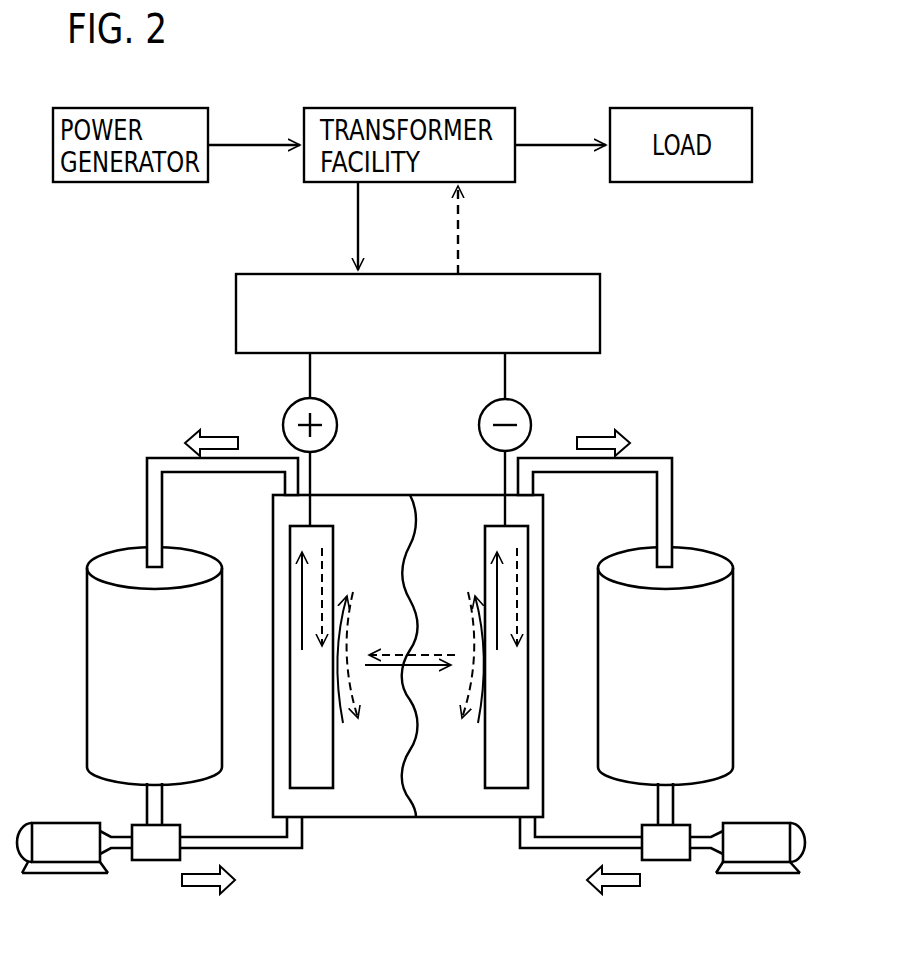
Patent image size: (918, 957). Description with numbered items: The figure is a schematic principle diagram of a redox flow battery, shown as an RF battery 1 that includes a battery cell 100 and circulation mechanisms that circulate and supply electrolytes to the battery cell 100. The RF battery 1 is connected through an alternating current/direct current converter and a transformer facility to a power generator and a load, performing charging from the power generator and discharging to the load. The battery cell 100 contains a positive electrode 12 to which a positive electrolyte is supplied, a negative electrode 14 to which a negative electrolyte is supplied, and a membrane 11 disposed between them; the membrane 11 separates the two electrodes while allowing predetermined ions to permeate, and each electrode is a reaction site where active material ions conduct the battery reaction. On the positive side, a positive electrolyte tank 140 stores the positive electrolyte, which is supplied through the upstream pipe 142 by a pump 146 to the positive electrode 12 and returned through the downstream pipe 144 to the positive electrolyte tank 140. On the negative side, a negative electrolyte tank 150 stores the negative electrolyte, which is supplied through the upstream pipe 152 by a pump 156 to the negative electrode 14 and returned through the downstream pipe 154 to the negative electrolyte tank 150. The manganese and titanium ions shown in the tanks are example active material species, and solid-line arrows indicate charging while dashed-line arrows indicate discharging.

The RF battery 1 is at (716, 385).
The battery cell 100 is at (380, 490).
The membrane 11 is at (415, 785).
The positive electrode 12 is at (292, 760).
The negative electrode 14 is at (526, 752).
The positive electrolyte tank 140 is at (107, 560).
The pipe 142 is at (264, 850).
The pipe 144 is at (163, 455).
The pump 146 is at (45, 822).
The negative electrolyte tank 150 is at (712, 556).
The pipe 152 is at (560, 850).
The pipe 154 is at (655, 455).
The pump 156 is at (775, 822).